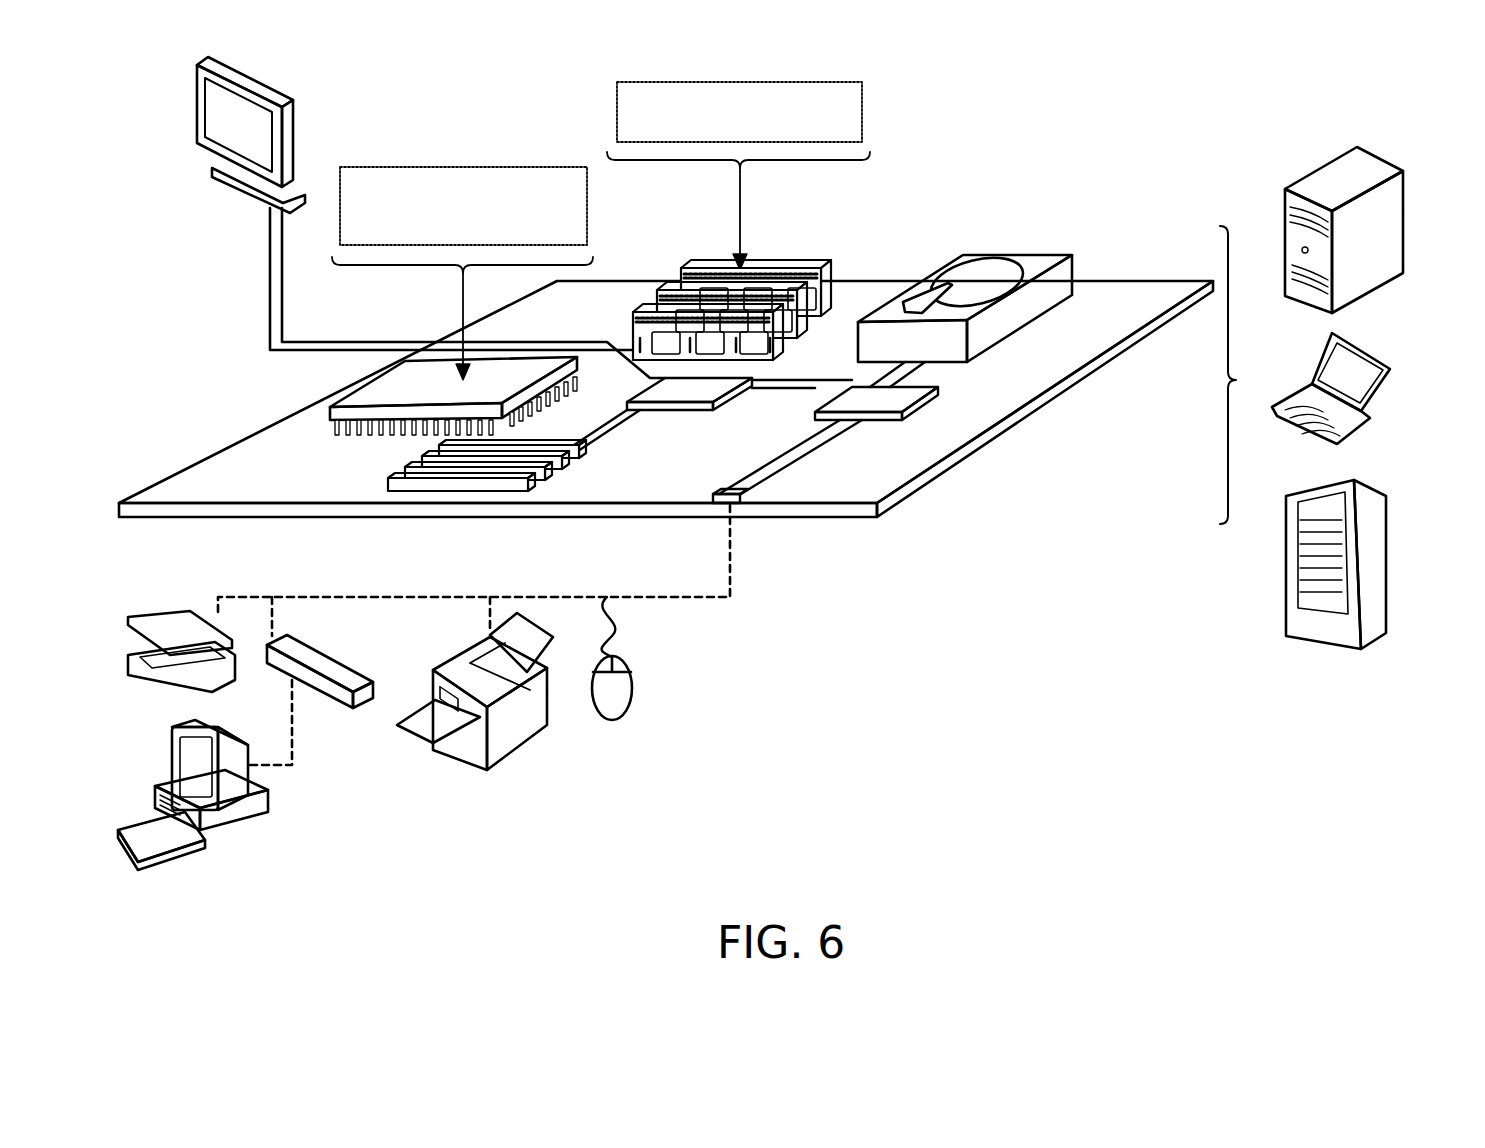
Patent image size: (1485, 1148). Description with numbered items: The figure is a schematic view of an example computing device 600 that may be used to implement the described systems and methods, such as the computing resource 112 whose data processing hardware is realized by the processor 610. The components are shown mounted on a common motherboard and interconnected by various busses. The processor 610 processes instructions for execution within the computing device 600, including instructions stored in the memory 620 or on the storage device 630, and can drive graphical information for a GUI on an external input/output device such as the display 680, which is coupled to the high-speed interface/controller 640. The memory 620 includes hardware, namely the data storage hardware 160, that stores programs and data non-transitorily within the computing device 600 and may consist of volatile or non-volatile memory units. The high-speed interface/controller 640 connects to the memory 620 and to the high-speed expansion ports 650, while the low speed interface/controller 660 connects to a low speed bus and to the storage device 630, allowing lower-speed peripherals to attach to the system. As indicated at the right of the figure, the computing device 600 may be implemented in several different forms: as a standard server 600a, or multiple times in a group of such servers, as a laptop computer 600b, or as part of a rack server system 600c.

The computing device 600 is at (938, 126).
The display 680 is at (195, 108).
The computing resource 112 is at (470, 167).
The data storage hardware 160 is at (745, 82).
The processor 610 is at (330, 407).
The memory 620 is at (647, 303).
The storage device 630 is at (1012, 256).
The high-speed interface/controller 640 is at (694, 411).
The high-speed expansion ports 650 is at (388, 480).
The low speed interface/controller 660 is at (862, 386).
The standard server 600a is at (1282, 165).
The laptop computer 600b is at (1360, 354).
The rack server system 600c is at (1375, 542).